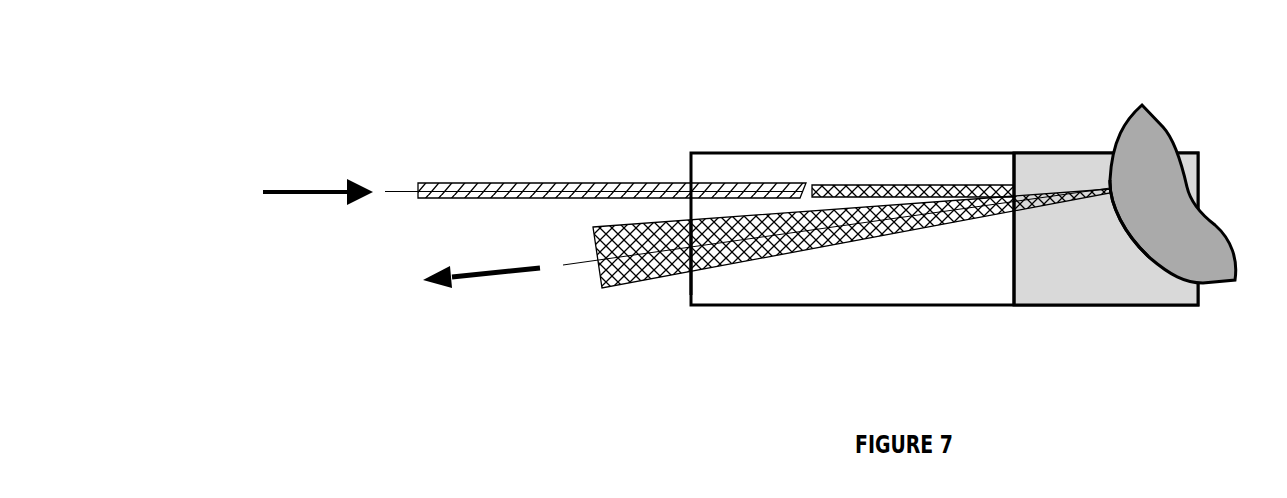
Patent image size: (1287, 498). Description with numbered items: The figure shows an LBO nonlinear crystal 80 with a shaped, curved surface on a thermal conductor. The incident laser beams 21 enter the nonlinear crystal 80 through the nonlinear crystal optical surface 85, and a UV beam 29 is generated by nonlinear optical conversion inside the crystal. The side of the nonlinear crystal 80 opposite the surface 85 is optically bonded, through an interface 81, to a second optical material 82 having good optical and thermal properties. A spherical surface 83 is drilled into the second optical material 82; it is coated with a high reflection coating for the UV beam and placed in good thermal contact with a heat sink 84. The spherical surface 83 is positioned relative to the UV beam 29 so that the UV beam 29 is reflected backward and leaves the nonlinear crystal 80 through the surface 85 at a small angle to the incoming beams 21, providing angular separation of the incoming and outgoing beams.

The incident laser beam 21 is at (532, 181).
The nonlinear crystal 80 is at (833, 153).
The second optical material 82 is at (1035, 153).
The interface 81 is at (1013, 243).
The UV beam 29 is at (807, 250).
The nonlinear crystal optical surface 85 is at (688, 292).
The heat sink 84 is at (1177, 145).
The spherical surface 83 is at (1125, 223).